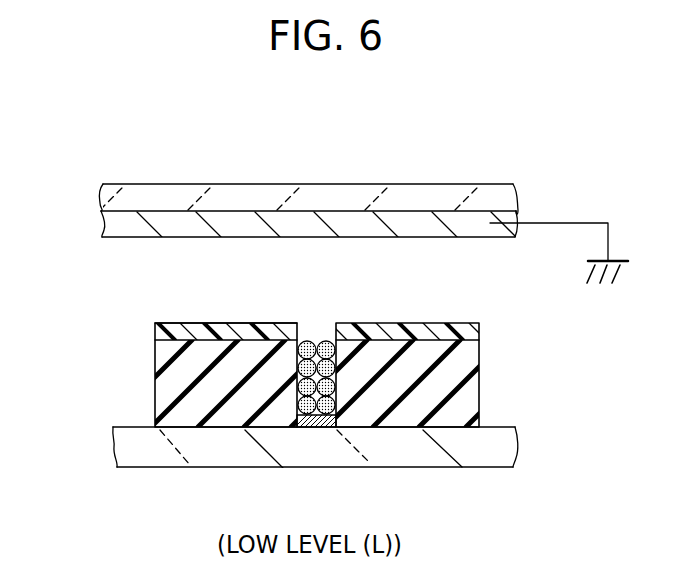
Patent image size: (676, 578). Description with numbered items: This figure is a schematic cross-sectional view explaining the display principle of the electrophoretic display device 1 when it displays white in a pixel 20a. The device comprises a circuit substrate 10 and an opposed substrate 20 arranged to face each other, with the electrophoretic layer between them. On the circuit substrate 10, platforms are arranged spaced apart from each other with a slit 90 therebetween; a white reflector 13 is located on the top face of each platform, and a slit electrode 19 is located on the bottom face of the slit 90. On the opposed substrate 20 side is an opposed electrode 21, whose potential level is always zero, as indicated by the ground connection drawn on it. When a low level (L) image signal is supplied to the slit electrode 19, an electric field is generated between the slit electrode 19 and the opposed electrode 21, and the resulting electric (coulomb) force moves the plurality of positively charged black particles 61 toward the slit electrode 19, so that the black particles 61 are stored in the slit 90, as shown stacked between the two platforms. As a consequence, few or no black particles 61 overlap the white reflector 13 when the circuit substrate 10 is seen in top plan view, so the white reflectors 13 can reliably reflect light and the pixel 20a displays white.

The electrophoretic display device 1 is at (357, 151).
The circuit substrate 10 is at (115, 447).
The white reflector 13 is at (158, 328).
The slit electrode 19 is at (302, 428).
The opposed substrate 20 is at (102, 191).
The pixel 20a is at (199, 316).
The opposed electrode 21 is at (102, 223).
The black particle 61 is at (332, 339).
The slit 90 is at (308, 339).